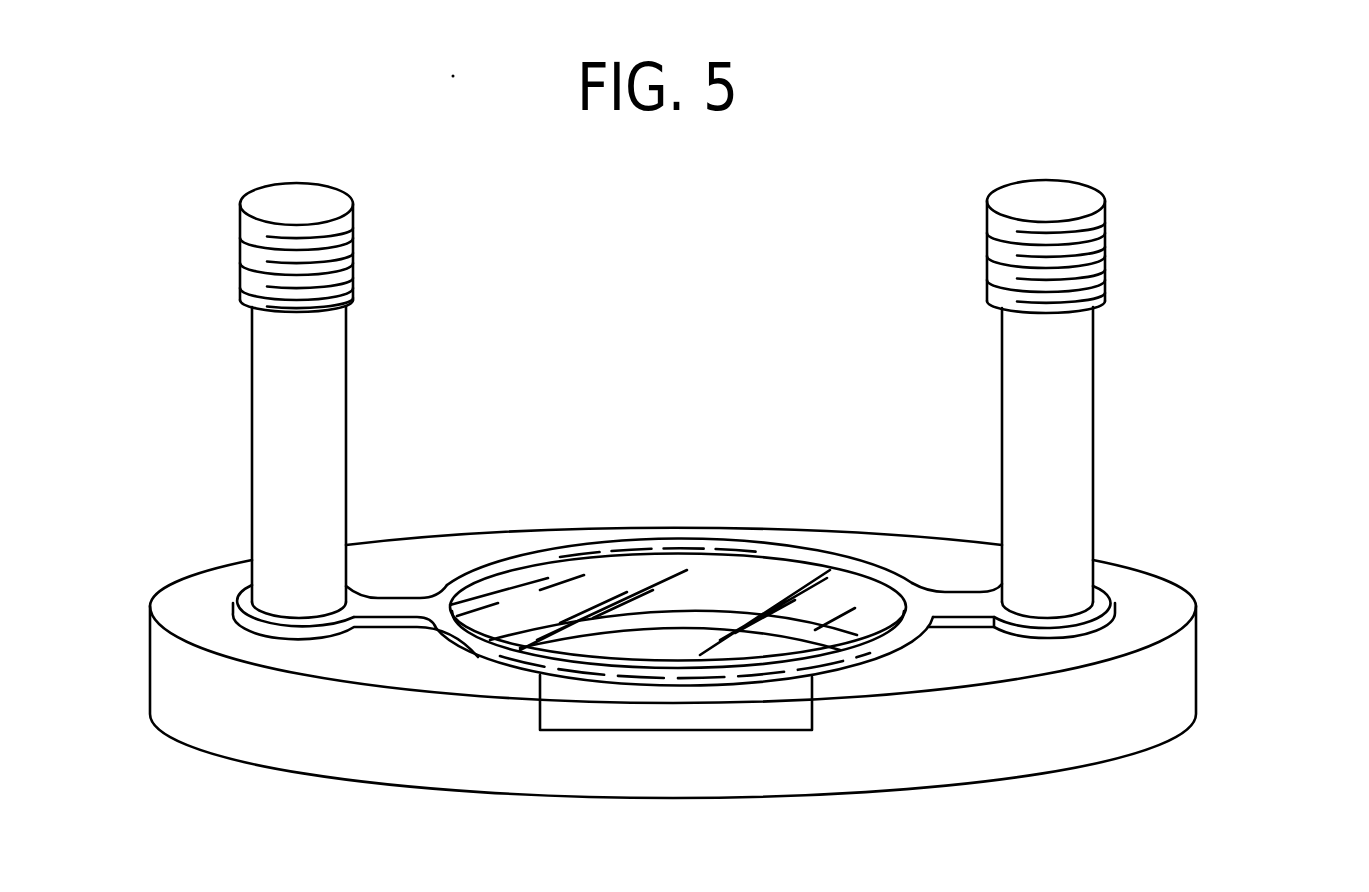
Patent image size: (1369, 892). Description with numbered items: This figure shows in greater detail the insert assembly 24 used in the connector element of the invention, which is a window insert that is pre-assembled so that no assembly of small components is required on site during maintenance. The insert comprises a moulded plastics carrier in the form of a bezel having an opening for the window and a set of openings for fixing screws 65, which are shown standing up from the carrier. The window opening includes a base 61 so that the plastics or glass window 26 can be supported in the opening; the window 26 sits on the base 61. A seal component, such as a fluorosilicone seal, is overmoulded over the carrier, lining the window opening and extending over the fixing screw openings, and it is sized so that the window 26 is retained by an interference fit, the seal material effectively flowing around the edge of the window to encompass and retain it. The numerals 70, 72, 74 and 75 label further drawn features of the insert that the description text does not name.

The insert assembly 24 is at (1228, 477).
The window 26 is at (711, 585).
The base 61 is at (537, 633).
The fixing screws 65 is at (330, 385).
The base 70 is at (1183, 662).
The post bore 72 is at (293, 618).
The raised collar 74 is at (245, 605).
The tab 75 is at (842, 665).